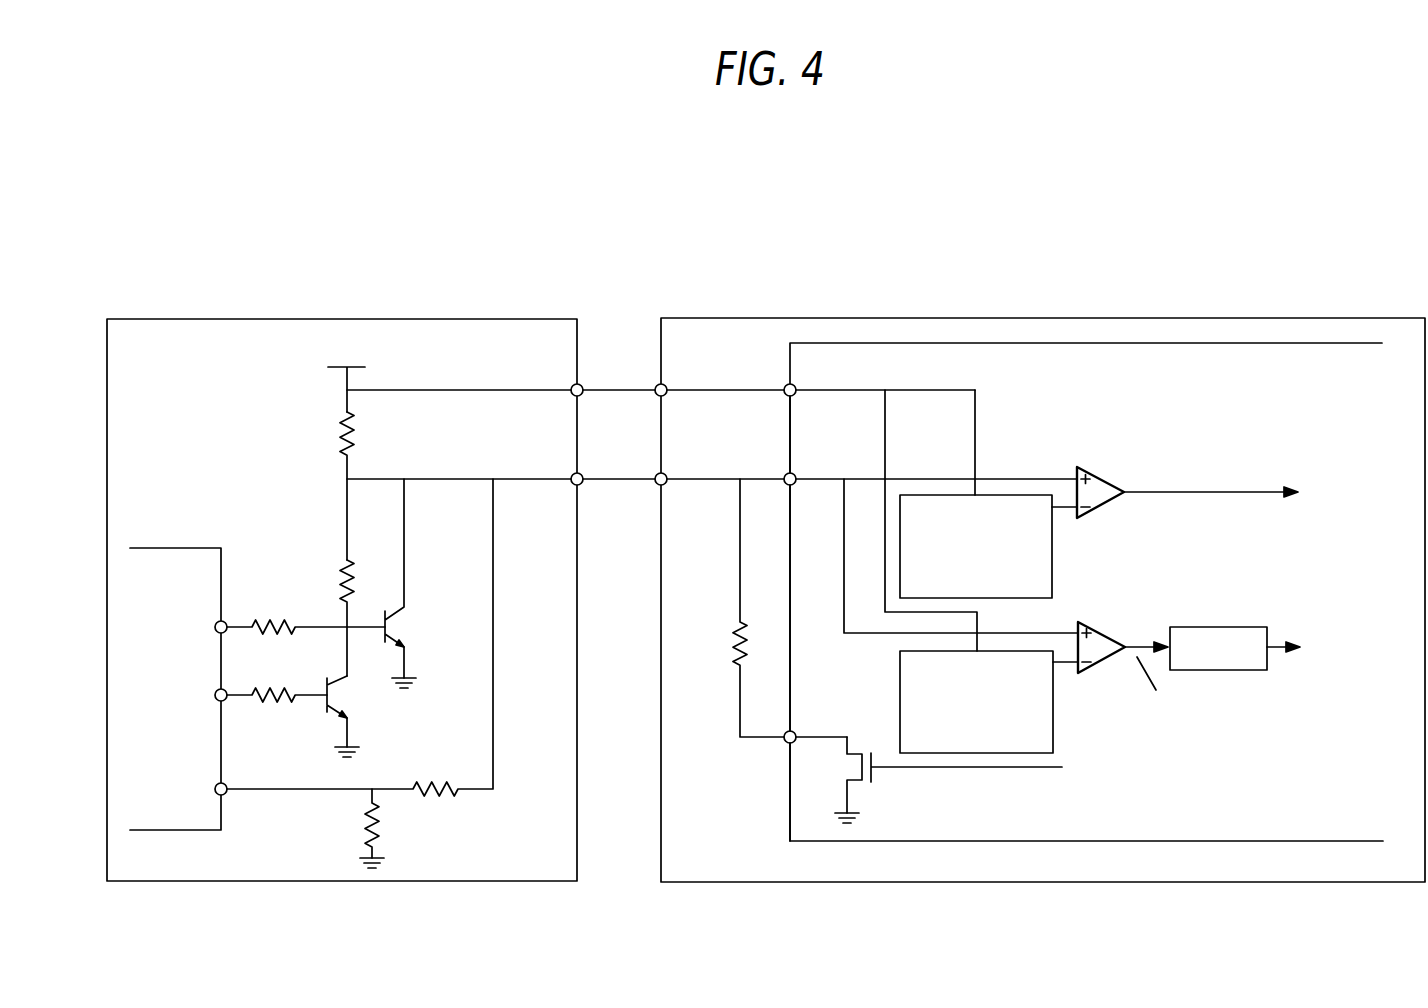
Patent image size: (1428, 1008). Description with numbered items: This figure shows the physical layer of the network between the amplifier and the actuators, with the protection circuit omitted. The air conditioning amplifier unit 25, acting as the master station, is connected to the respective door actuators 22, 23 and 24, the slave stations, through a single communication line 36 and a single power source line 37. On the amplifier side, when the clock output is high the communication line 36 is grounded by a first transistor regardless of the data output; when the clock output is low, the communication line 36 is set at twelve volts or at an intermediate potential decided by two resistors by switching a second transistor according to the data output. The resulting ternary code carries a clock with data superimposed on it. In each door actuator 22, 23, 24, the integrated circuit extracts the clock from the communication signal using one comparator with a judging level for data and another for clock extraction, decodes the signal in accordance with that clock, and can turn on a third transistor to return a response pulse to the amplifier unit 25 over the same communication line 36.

The air conditioning amplifier unit 25 is at (500, 318).
The door actuator 22 is at (1043, 573).
The door actuator 23 is at (1043, 573).
The door actuator 24 is at (805, 317).
The power source line 37 is at (616, 388).
The communication line 36 is at (617, 484).